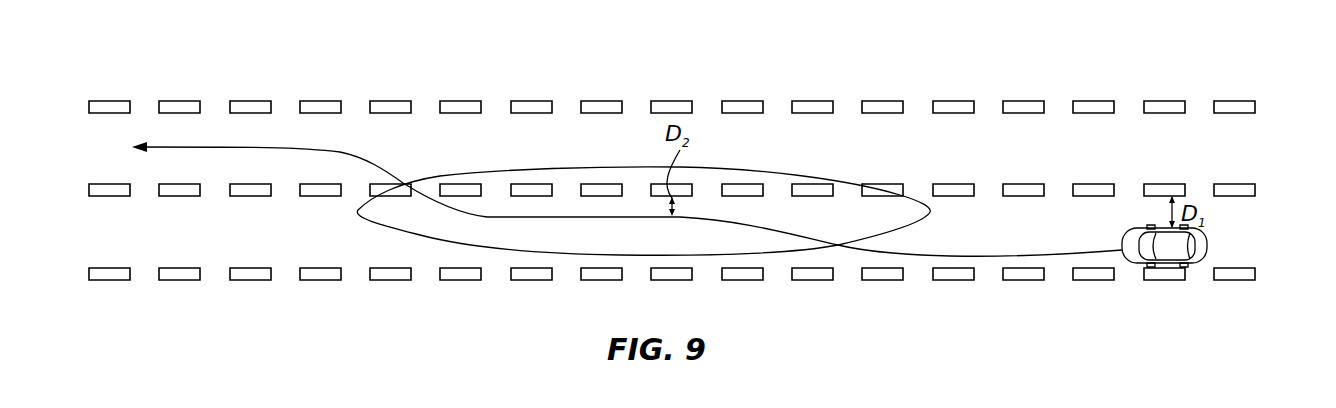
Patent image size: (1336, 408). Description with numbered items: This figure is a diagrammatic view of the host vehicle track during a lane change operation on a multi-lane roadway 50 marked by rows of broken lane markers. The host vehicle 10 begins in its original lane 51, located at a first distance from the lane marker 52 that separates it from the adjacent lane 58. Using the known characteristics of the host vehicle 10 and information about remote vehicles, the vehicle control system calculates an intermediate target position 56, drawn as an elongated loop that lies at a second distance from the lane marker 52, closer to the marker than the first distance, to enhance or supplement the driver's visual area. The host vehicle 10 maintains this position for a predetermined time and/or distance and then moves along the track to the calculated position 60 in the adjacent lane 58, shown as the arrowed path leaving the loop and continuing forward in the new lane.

The host vehicle 10 is at (1173, 247).
The roadway 50 is at (944, 298).
The lane 51 is at (1243, 238).
The lane marker 52 is at (1093, 185).
The intermediate target position 56 is at (777, 172).
The adjacent lane 58 is at (1087, 128).
The calculated position 60 is at (202, 147).